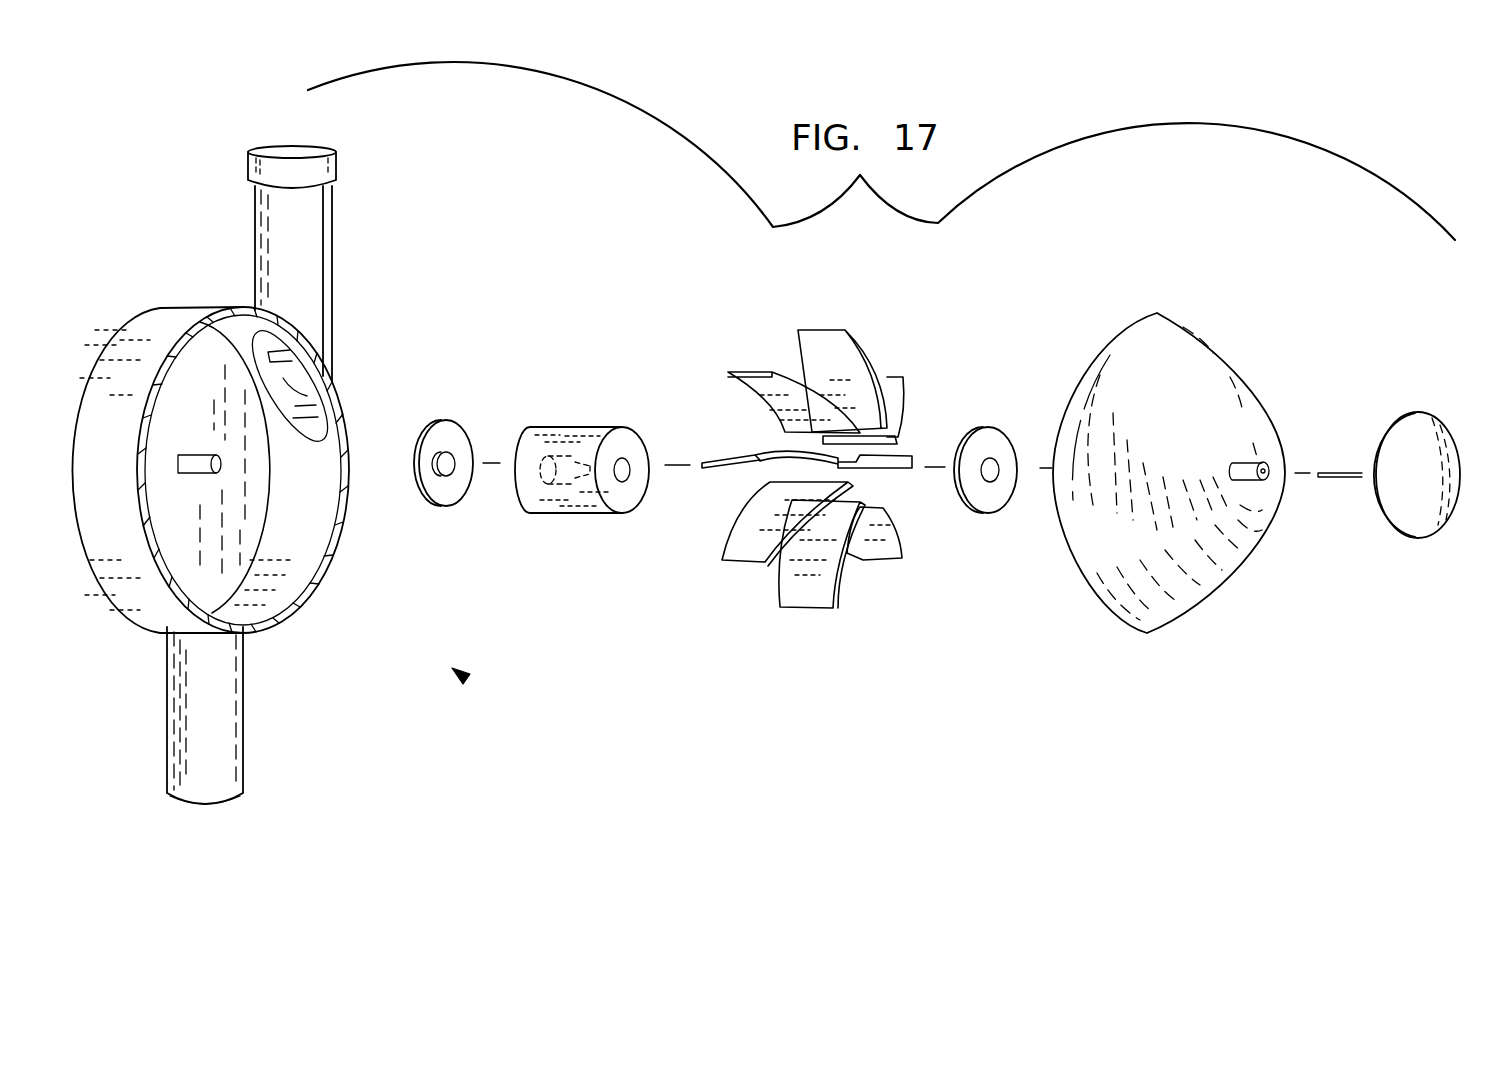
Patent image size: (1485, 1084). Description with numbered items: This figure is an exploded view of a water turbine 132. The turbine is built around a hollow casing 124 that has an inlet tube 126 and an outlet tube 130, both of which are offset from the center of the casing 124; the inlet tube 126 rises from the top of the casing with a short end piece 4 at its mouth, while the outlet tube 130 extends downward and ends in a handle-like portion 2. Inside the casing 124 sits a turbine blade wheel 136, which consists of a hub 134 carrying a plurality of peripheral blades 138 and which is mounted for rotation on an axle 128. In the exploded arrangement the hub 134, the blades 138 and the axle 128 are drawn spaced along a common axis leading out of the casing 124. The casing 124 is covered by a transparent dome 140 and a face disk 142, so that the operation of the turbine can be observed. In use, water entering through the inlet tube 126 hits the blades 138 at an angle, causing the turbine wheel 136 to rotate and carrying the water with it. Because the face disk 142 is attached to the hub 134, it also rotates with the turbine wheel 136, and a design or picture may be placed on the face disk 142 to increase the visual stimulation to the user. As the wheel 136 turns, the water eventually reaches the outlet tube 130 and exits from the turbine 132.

The handle tube 2 is at (243, 792).
The nozzle cap 4 is at (336, 175).
The hollow casing 124 is at (175, 308).
The inlet tube 126 is at (332, 250).
The axle 128 is at (220, 470).
The outlet tube 130 is at (243, 710).
The water turbine 132 is at (466, 679).
The hub 134 is at (572, 513).
The turbine blade wheel 136 is at (779, 472).
The peripheral blades 138 is at (870, 352).
The transparent dome 140 is at (1212, 597).
The face disk 142 is at (1410, 538).